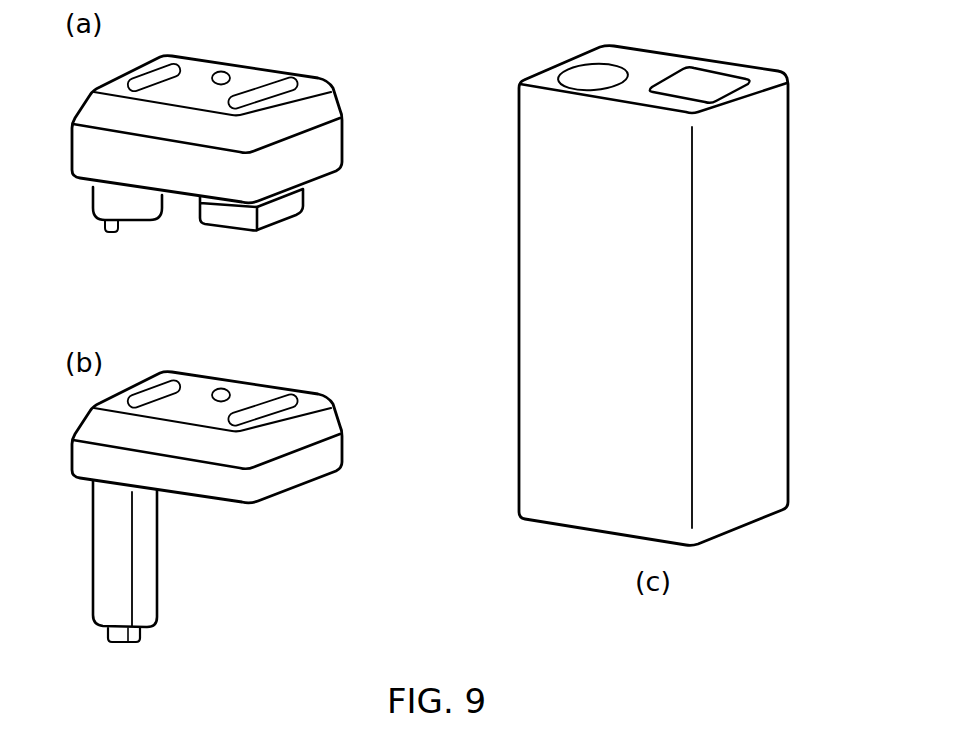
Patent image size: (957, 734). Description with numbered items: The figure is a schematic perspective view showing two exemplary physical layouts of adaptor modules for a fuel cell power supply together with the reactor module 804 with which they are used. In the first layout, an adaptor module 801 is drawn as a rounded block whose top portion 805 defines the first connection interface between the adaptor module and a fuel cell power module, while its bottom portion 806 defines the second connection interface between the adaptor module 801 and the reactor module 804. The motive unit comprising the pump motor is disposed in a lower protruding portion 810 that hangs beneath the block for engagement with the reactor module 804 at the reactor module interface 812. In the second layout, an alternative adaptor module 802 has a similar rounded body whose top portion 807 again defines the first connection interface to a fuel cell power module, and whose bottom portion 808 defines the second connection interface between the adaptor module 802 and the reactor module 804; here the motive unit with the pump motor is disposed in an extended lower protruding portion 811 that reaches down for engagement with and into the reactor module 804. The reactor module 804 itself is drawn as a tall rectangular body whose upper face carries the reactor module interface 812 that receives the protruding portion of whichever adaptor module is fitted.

The adaptor module 801 is at (338, 100).
The alternative adaptor module 802 is at (340, 417).
The reactor module 804 is at (788, 300).
The top portion 805 is at (207, 65).
The bottom portion 806 is at (265, 232).
The top portion 807 is at (207, 385).
The bottom portion 808 is at (158, 577).
The lower protruding portion 810 is at (118, 230).
The extended lower protruding portion 811 is at (120, 643).
The reactor module interface 812 is at (653, 65).